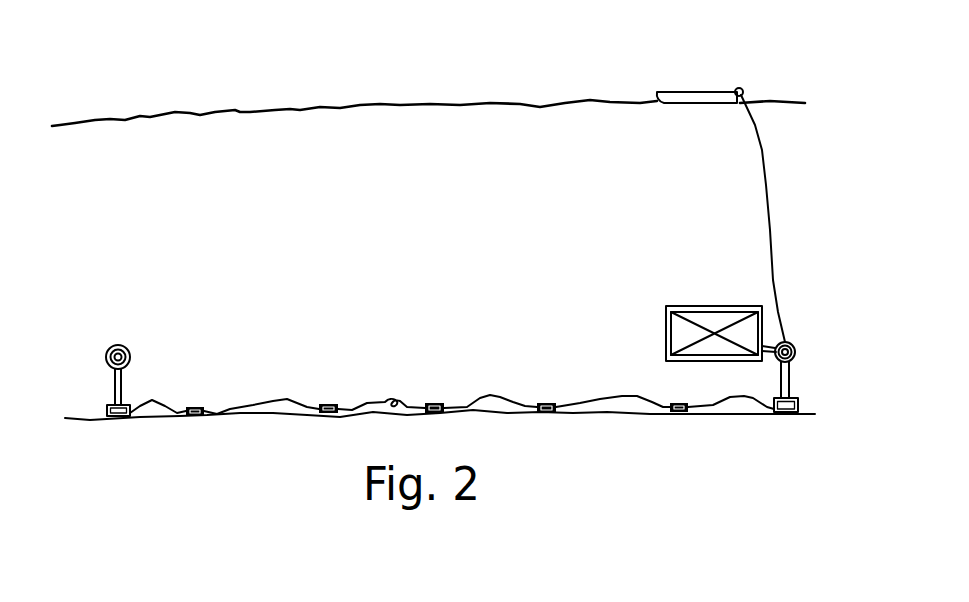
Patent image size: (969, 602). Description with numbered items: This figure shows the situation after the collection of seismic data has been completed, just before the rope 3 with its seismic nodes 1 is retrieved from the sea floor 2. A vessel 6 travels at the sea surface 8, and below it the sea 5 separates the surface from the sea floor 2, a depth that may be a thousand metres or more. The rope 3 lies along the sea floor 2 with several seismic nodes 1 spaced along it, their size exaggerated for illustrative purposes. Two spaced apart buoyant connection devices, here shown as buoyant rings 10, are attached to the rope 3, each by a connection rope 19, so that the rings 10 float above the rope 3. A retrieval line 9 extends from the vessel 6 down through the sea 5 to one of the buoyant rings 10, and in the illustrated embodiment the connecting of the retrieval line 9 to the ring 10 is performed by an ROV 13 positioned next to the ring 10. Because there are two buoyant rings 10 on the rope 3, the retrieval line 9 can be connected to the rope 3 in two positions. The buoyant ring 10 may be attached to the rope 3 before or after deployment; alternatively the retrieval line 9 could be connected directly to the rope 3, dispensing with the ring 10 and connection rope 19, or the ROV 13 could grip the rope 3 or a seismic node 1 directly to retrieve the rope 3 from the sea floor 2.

The seismic nodes 1 is at (194, 407).
The sea floor 2 is at (92, 417).
The rope 3 is at (269, 398).
The sea 5 is at (400, 241).
The vessel 6 is at (682, 98).
The sea surface 8 is at (245, 110).
The retrieval line 9 is at (768, 185).
The buoyant ring 10 is at (122, 345).
The ROV 13 is at (664, 327).
The connection rope 19 is at (792, 378).